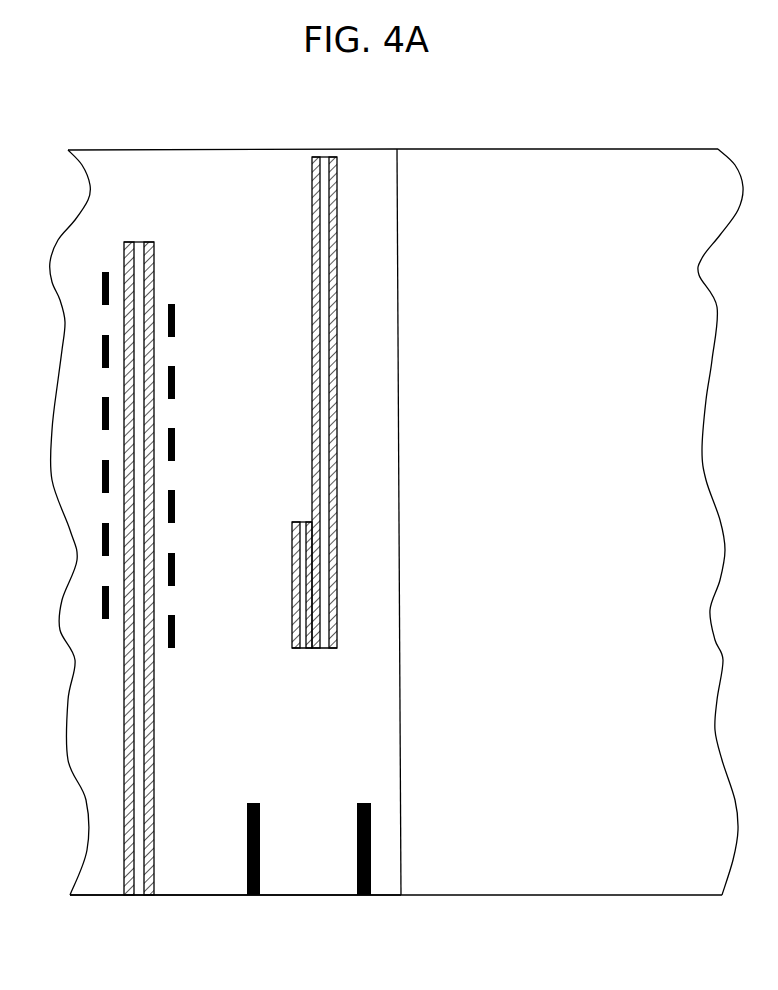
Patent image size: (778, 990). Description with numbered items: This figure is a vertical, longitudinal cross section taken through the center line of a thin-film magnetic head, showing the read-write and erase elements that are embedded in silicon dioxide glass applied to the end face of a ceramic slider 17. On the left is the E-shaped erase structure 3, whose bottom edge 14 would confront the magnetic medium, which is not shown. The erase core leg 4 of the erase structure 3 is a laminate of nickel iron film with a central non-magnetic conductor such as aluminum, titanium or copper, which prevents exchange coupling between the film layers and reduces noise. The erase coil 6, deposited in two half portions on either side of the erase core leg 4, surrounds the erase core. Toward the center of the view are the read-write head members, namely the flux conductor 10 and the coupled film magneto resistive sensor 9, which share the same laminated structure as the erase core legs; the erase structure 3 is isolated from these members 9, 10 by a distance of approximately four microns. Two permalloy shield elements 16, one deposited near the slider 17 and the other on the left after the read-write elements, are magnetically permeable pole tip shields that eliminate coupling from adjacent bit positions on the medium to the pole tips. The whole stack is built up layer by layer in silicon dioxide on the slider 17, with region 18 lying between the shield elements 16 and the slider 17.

The E-shaped erase structure 3 is at (106, 542).
The erase core leg 4 is at (138, 422).
The erase coil 6 is at (102, 278).
The coupled film magneto resistive sensor 9 is at (292, 520).
The flux conductor 10 is at (323, 188).
The bottom edge of the pole tips 14 is at (128, 912).
The permalloy shield element 16 is at (248, 868).
The slider 17 is at (549, 160).
The first chamber wall 18 is at (243, 178).